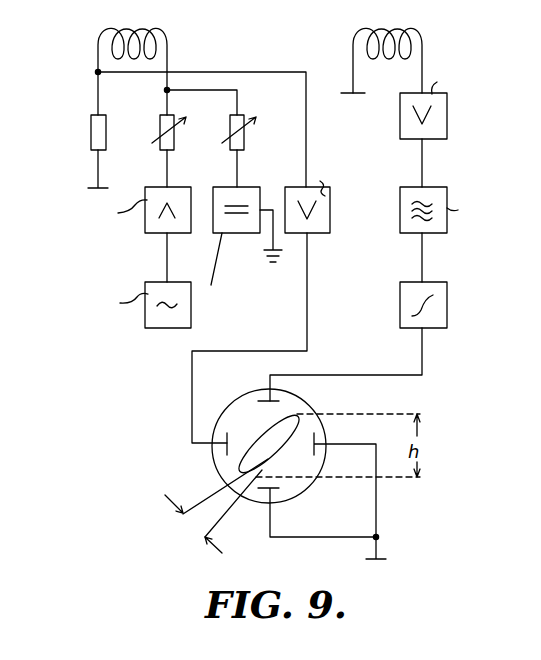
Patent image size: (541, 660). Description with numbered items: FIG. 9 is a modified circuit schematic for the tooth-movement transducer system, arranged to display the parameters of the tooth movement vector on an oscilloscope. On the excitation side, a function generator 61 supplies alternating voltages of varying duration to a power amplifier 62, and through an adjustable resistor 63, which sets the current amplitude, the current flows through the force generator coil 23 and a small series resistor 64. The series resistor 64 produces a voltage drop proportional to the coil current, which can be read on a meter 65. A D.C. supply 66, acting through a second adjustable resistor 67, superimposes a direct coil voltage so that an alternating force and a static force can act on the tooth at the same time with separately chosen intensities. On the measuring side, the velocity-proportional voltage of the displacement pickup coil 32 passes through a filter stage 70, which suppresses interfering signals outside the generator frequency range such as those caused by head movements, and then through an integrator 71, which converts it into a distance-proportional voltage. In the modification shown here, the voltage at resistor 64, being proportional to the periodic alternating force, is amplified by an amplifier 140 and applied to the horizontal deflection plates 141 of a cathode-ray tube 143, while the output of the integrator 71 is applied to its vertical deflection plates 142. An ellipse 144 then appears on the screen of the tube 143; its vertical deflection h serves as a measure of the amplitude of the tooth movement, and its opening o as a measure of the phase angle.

The force generator coil 23 is at (160, 42).
The displacement pickup coil 32 is at (410, 42).
The function generator 61 is at (150, 325).
The power amplifier 62 is at (147, 228).
The adjustable resistor 63 is at (174, 135).
The series resistor 64 is at (106, 135).
The meter 65 is at (448, 105).
The D.C. supply 66 is at (240, 233).
The adjustable resistor 67 is at (244, 135).
The filter stage 70 is at (447, 190).
The integrator 71 is at (398, 316).
The amplifier 140 is at (322, 225).
The horizontal deflection plates 141 is at (230, 433).
The vertical deflection plates 142 is at (276, 401).
The cathode-ray tube 143 is at (313, 483).
The beam trace spot 144 is at (240, 472).